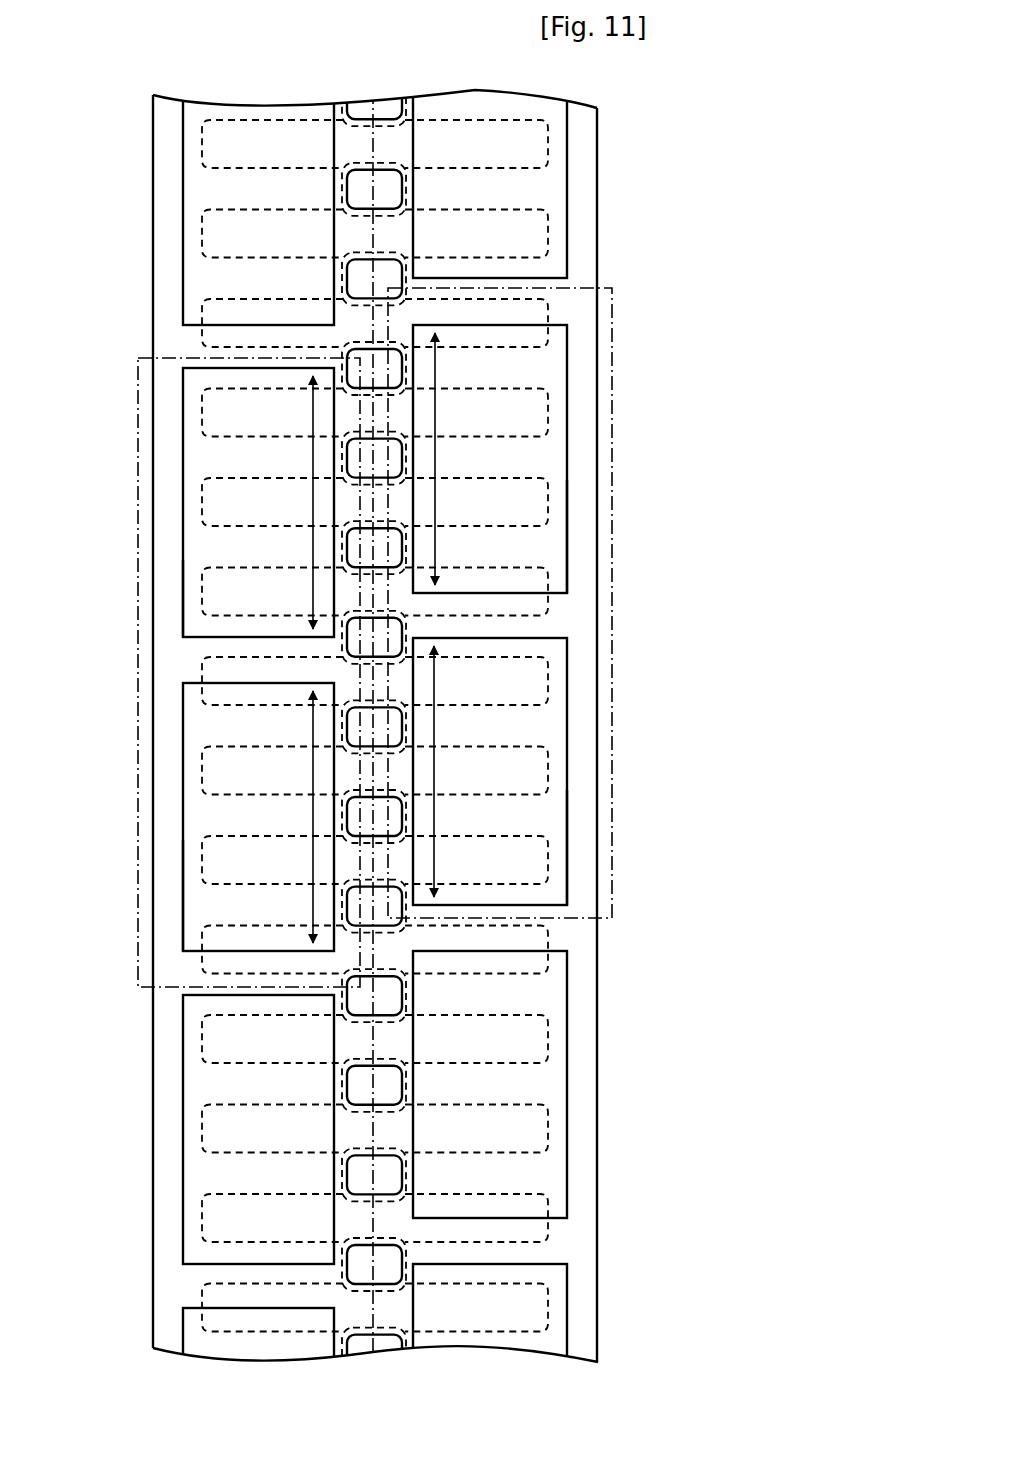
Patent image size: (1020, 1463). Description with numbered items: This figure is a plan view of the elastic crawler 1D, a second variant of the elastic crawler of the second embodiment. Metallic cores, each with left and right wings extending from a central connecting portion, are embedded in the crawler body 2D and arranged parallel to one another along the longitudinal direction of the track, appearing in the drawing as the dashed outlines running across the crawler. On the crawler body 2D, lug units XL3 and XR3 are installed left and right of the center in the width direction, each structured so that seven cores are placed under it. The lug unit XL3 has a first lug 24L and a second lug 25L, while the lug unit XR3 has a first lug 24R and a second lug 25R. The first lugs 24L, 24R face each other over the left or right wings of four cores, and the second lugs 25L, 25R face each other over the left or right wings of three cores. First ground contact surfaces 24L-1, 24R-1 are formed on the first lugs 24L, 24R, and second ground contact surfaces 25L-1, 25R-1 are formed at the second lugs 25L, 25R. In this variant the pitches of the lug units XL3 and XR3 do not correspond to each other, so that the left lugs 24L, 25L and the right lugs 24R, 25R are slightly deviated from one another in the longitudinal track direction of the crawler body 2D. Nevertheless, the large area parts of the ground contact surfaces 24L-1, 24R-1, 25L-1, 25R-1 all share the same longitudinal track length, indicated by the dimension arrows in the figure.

The elastic crawler 1D is at (596, 75).
The crawler body 2D is at (612, 1122).
The lug unit XL3 is at (134, 368).
The lug unit XR3 is at (617, 327).
The second lug 25L is at (188, 456).
The second ground contact surface 25L-1 is at (210, 603).
The first lug 24L is at (186, 814).
The first ground contact surface 24L-1 is at (213, 852).
The first lug 24R is at (567, 453).
The first ground contact surface 24R-1 is at (533, 497).
The second lug 25R is at (567, 659).
The second ground contact surface 25R-1 is at (532, 808).